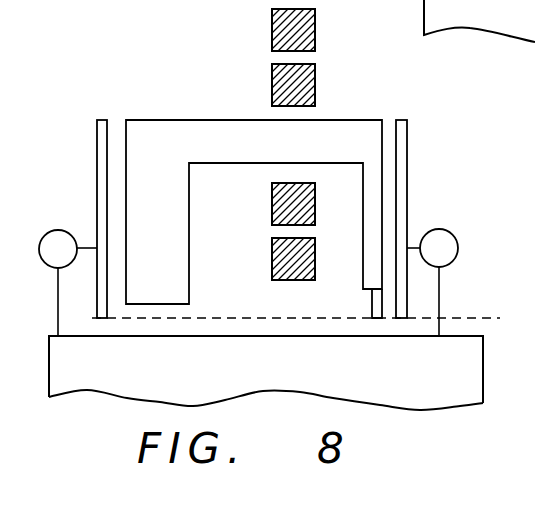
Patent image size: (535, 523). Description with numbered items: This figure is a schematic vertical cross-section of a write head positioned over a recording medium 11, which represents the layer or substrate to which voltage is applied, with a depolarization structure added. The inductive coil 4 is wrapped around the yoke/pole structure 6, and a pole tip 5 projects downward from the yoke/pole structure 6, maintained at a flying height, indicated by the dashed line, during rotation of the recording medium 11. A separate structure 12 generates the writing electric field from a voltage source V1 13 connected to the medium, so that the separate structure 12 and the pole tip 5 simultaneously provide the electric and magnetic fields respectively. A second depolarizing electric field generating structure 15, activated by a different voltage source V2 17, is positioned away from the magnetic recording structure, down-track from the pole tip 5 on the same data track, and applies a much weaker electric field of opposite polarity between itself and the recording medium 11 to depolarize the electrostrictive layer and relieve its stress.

The inductive coil 4 is at (281, 25).
The pole tip 5 is at (372, 305).
The yoke/pole structure 6 is at (364, 131).
The recording medium 11 is at (470, 336).
The separate structure 12 is at (405, 150).
The voltage source V1 13 is at (461, 248).
The second depolarizing electric field generating structure 15 is at (102, 143).
The voltage source V2 17 is at (50, 229).